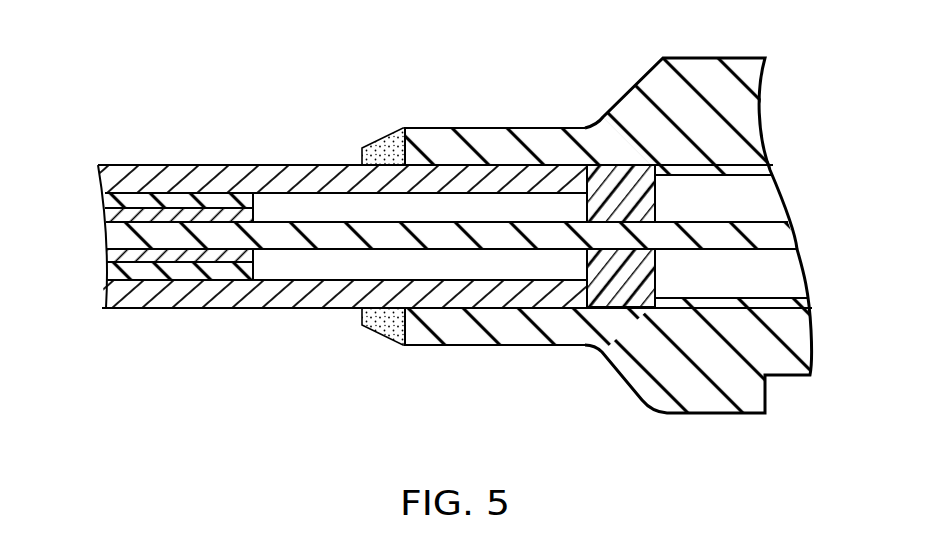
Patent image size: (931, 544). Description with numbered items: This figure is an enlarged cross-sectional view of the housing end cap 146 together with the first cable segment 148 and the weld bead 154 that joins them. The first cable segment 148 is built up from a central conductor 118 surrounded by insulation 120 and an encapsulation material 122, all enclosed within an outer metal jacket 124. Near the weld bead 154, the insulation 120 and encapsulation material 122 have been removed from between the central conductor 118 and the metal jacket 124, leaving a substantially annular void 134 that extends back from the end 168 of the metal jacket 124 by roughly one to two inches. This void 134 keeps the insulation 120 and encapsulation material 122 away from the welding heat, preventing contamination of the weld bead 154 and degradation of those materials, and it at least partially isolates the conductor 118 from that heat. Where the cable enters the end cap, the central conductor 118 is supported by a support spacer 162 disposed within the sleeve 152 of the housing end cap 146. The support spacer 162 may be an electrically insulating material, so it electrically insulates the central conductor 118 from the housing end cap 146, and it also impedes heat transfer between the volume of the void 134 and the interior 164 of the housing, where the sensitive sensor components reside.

The central conductor 118 is at (110, 247).
The insulation 120 is at (110, 221).
The encapsulation material 122 is at (118, 200).
The metal jacket 124 is at (128, 184).
The annular void 134 is at (423, 204).
The housing end cap 146 is at (662, 82).
The first cable segment 148 is at (107, 337).
The sleeve 152 is at (548, 147).
The weld bead 154 is at (383, 150).
The support spacer 162 is at (623, 277).
The interior 164 is at (783, 272).
The end 168 is at (610, 172).